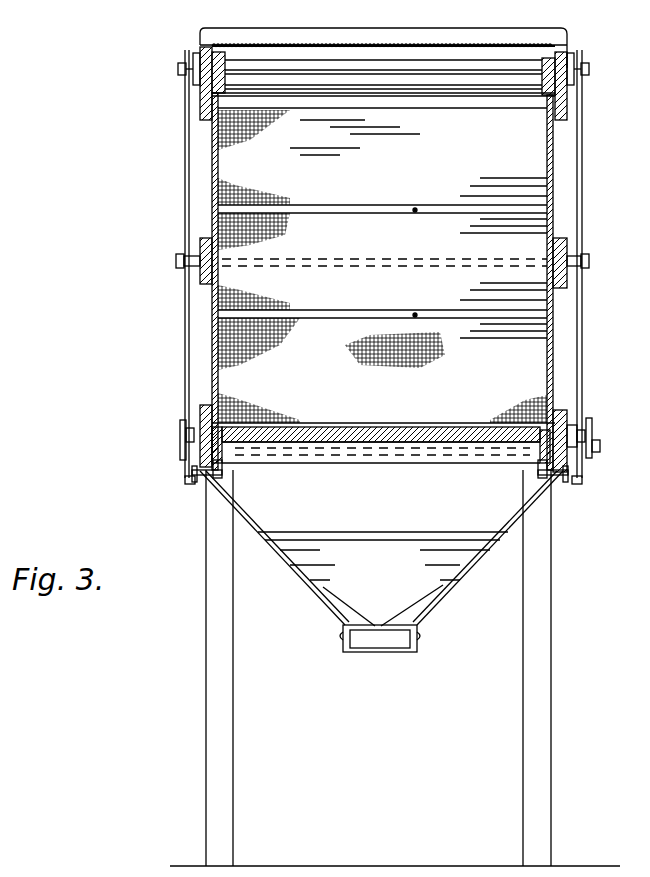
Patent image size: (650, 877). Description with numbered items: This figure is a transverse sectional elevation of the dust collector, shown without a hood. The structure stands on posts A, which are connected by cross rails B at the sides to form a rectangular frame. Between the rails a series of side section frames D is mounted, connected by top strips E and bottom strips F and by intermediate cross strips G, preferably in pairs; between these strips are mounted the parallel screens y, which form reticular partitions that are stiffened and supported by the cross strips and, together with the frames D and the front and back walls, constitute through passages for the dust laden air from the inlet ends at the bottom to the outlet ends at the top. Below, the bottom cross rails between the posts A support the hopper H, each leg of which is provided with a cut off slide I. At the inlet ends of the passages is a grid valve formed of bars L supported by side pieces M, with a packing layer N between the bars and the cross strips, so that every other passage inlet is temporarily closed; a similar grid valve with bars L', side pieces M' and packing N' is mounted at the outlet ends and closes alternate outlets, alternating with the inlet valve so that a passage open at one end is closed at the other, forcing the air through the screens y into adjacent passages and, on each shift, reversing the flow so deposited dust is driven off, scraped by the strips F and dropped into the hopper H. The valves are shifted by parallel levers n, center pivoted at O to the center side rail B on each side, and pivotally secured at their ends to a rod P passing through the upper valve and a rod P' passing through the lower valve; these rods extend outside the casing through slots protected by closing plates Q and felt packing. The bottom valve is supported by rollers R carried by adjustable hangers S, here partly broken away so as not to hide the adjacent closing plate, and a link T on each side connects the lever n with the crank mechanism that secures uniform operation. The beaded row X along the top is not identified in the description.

The posts A is at (213, 677).
The cross rails B is at (200, 113).
The frames D is at (212, 173).
The top strips E is at (362, 100).
The bottom strips F is at (348, 422).
The intermediate cross strips G is at (338, 205).
The hopper H is at (287, 566).
The cut off slide I is at (372, 628).
The bars L is at (381, 464).
The upper grid valve bars L' is at (383, 80).
The side pieces M is at (381, 457).
The upper side pieces M' is at (383, 49).
The packing layer N is at (381, 418).
The upper packing layer N' is at (383, 114).
The pivot O is at (178, 260).
The rod P is at (383, 36).
The rod P' is at (607, 451).
The closing plates Q is at (193, 63).
The rollers R is at (214, 478).
The adjustable hangers S is at (198, 472).
The link T is at (182, 430).
The beading X is at (394, 45).
The parallel levers n is at (185, 322).
The parallel screens y is at (246, 140).